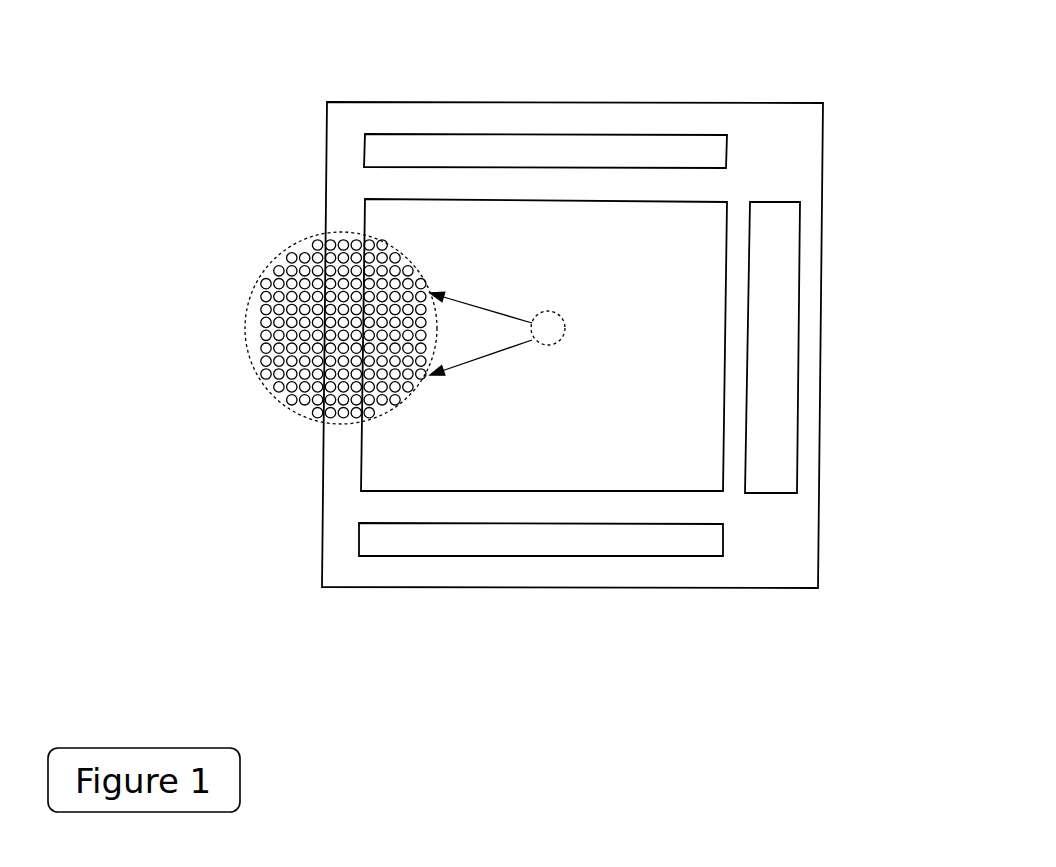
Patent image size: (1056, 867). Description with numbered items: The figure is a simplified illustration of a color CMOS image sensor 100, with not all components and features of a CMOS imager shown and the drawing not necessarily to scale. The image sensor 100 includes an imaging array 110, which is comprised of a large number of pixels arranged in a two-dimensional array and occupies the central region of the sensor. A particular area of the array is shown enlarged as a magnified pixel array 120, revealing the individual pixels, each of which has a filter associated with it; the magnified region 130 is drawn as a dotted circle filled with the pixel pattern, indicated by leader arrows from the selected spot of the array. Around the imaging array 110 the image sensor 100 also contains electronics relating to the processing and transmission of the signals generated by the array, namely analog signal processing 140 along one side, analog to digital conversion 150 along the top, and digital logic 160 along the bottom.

The image sensor 100 is at (269, 156).
The imaging array 110 is at (389, 457).
The magnified pixel array 120 is at (549, 300).
The sensor array 130 is at (214, 329).
The analog signal processing 140 is at (819, 363).
The analog to digital conversion 150 is at (703, 124).
The digital logic 160 is at (702, 568).